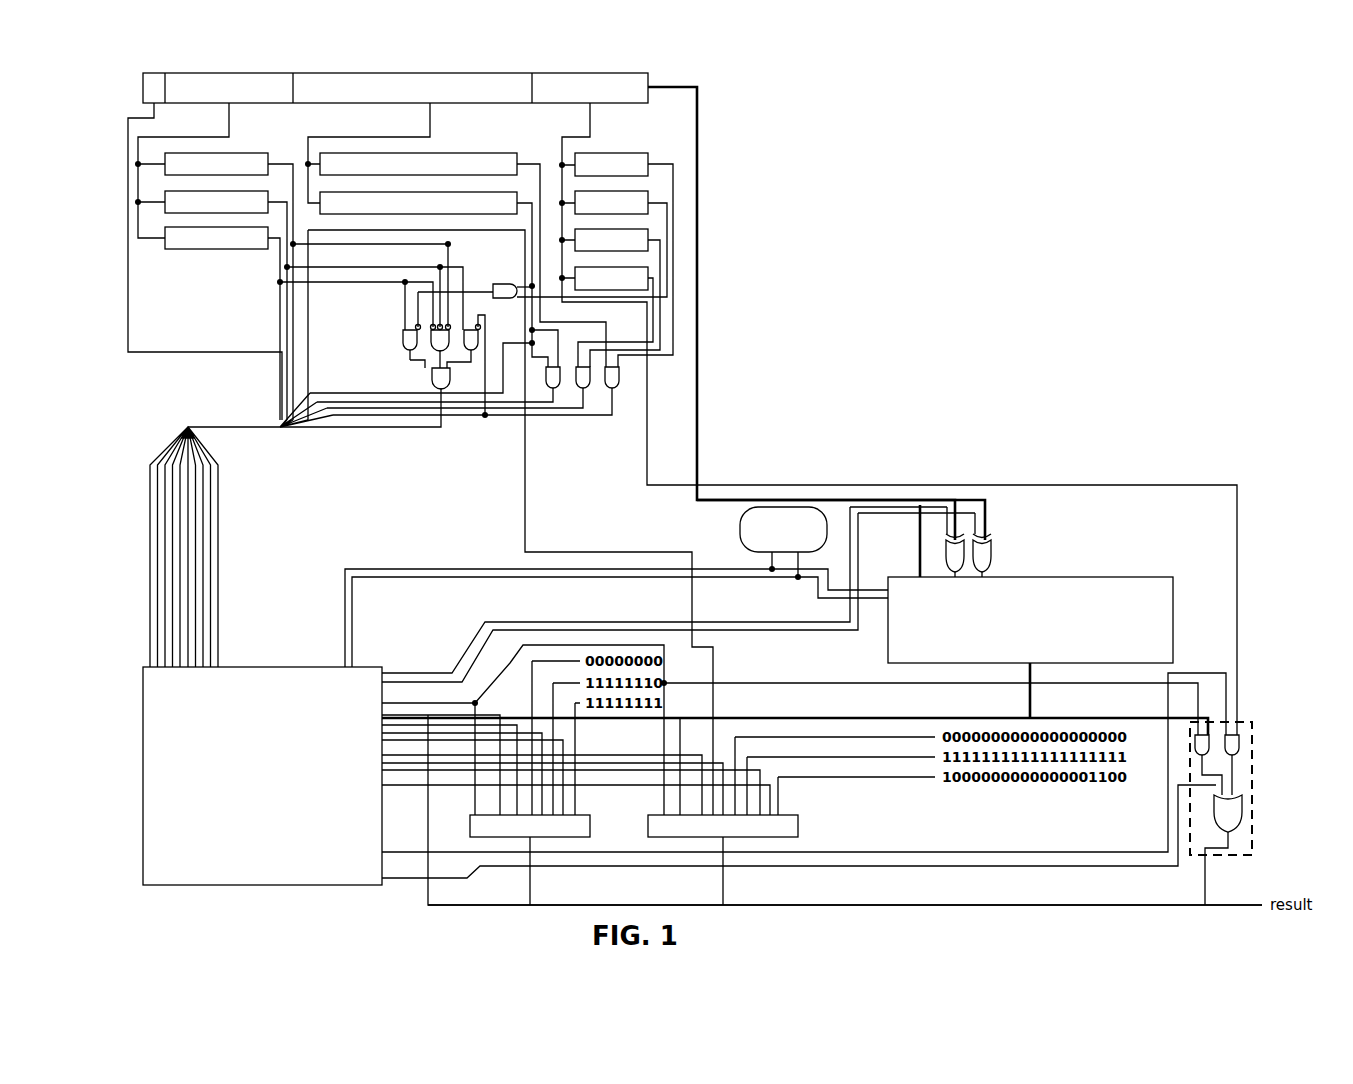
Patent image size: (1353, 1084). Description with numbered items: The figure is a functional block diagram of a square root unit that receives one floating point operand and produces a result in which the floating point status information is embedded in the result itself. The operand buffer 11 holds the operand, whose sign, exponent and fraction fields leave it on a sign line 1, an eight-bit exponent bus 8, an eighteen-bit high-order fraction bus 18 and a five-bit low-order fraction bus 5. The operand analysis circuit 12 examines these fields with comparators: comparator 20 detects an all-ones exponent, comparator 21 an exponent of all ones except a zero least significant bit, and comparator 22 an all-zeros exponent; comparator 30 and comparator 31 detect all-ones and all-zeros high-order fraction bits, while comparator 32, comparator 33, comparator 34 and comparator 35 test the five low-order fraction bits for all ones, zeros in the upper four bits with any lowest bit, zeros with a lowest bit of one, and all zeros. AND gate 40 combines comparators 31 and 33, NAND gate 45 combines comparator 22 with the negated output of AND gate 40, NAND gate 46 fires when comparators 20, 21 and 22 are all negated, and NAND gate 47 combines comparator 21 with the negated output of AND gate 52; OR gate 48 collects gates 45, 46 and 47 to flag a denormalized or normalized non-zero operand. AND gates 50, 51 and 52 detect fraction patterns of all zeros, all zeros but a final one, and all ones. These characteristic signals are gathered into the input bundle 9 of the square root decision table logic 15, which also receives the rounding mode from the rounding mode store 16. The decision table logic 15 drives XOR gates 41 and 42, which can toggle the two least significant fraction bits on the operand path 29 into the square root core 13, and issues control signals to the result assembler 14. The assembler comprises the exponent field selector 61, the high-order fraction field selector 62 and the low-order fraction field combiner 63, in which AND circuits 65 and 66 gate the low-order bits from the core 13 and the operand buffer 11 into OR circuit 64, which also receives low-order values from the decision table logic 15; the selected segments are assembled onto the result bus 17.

The sign output line 1 is at (452, 903).
The 5-bit flags bus 5 is at (592, 112).
The 8-bit exponent bus 8 is at (190, 118).
The input bundle to decision table 9 is at (218, 437).
The operand buffer 11 is at (395, 76).
The operand analysis circuit 12 is at (209, 306).
The square root core 13 is at (1030, 620).
The result assembler 14 is at (1252, 661).
The square root decision table logic circuit 15 is at (262, 776).
The rounding mode store 16 is at (736, 537).
The result bus 17 is at (805, 908).
The 18-bit fraction bus 18 is at (423, 112).
The comparator 20 is at (245, 152).
The comparator 21 is at (165, 198).
The comparator 22 is at (165, 239).
The core input bus 29 is at (920, 548).
The comparator 30 is at (335, 152).
The comparator 31 is at (463, 215).
The comparator 32 is at (632, 151).
The comparator 33 is at (650, 212).
The comparator 34 is at (650, 249).
The comparator 35 is at (650, 287).
The AND gate 40 is at (512, 300).
The XOR gate 41 is at (992, 550).
The XOR gate 42 is at (946, 549).
The NAND gate 45 is at (402, 338).
The NAND gate 46 is at (430, 352).
The NAND gate 47 is at (476, 355).
The OR gate 48 is at (432, 378).
The AND gate 50 is at (546, 392).
The AND gate 51 is at (578, 392).
The AND gate 52 is at (609, 392).
The exponent field selector 61 is at (530, 860).
The high-order fraction field selector 62 is at (723, 860).
The low-order fraction field combiner 63 is at (1255, 781).
The OR circuit 64 is at (1242, 812).
The AND circuit 65 is at (1209, 735).
The AND circuit 66 is at (1243, 741).